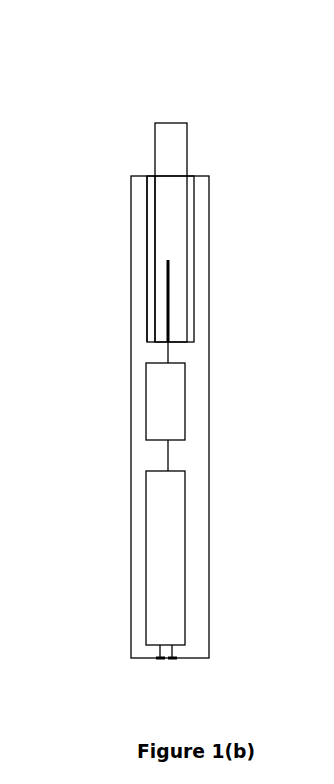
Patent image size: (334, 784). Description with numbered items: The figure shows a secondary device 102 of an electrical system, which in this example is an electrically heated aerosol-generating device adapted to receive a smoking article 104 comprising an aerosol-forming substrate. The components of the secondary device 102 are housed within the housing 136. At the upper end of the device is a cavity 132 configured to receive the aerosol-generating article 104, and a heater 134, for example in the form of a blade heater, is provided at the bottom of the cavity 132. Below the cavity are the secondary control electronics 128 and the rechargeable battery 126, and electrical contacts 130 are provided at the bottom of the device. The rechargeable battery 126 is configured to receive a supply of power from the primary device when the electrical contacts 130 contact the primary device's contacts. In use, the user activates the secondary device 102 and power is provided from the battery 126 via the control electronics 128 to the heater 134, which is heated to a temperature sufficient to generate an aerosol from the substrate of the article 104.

The secondary device 102 is at (80, 197).
The smoking article 104 is at (173, 133).
The housing 136 is at (143, 193).
The cavity 132 is at (152, 242).
The heater 134 is at (168, 288).
The secondary control electronics 128 is at (157, 395).
The rechargeable battery 126 is at (157, 525).
The electrical contacts 130 is at (158, 660).